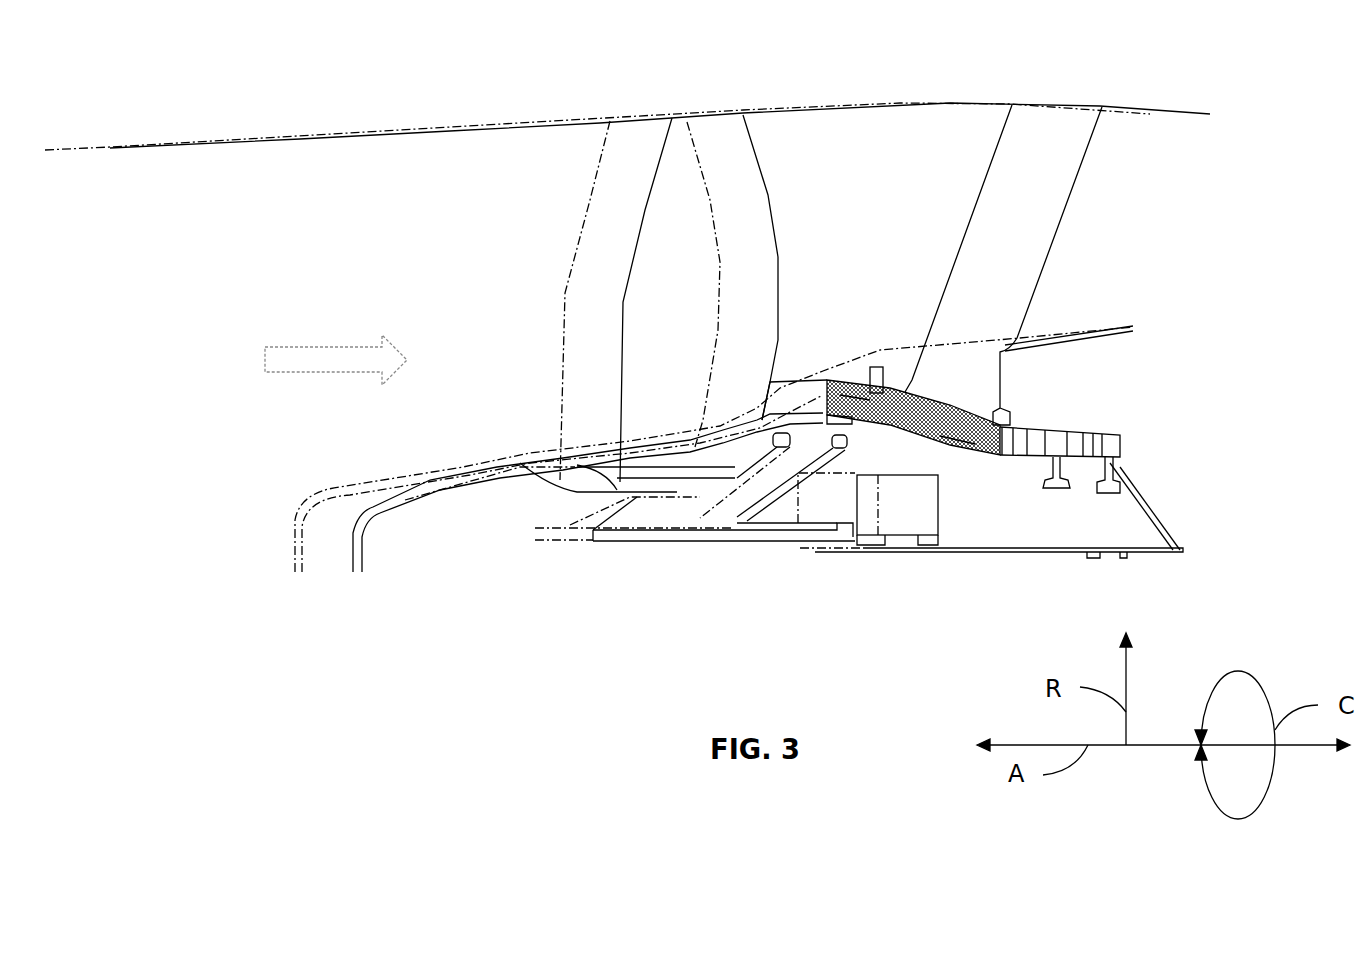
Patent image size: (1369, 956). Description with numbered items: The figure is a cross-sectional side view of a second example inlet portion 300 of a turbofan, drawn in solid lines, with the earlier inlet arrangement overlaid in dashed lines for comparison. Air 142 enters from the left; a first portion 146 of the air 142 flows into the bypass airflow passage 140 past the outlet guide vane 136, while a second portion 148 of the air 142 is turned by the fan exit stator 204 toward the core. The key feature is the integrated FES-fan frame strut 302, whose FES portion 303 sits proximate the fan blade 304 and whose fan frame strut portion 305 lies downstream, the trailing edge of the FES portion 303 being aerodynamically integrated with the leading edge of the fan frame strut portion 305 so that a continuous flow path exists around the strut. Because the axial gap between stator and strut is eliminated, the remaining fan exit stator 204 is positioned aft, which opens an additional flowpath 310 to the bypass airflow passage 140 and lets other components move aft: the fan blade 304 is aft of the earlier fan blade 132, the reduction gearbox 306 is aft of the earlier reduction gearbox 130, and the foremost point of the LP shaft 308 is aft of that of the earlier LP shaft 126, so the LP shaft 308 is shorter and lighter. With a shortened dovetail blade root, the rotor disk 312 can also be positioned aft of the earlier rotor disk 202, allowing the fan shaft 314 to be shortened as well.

The inlet portion 300 is at (188, 88).
The bypass airflow passage 140 is at (1197, 174).
The air 142 is at (320, 367).
The fan blade 132 is at (577, 250).
The fan blade 304 is at (775, 238).
The outlet guide vane 136 is at (1065, 215).
The first portion of the air 146 is at (955, 161).
The rotor disk 202 is at (553, 490).
The rotor disk 312 is at (590, 492).
The second portion of the air 148 is at (788, 378).
The fan exit stator 204 is at (804, 416).
The additional flowpath 310 is at (860, 357).
The integrated FES-fan frame strut 302 is at (923, 397).
The FES portion 303 is at (850, 408).
The fan frame strut portion 305 is at (960, 437).
The reduction gearbox 306 is at (938, 508).
The reduction gearbox 130 is at (798, 500).
The fan shaft 314 is at (723, 541).
The LP shaft 126 is at (843, 552).
The LP shaft 308 is at (1127, 555).